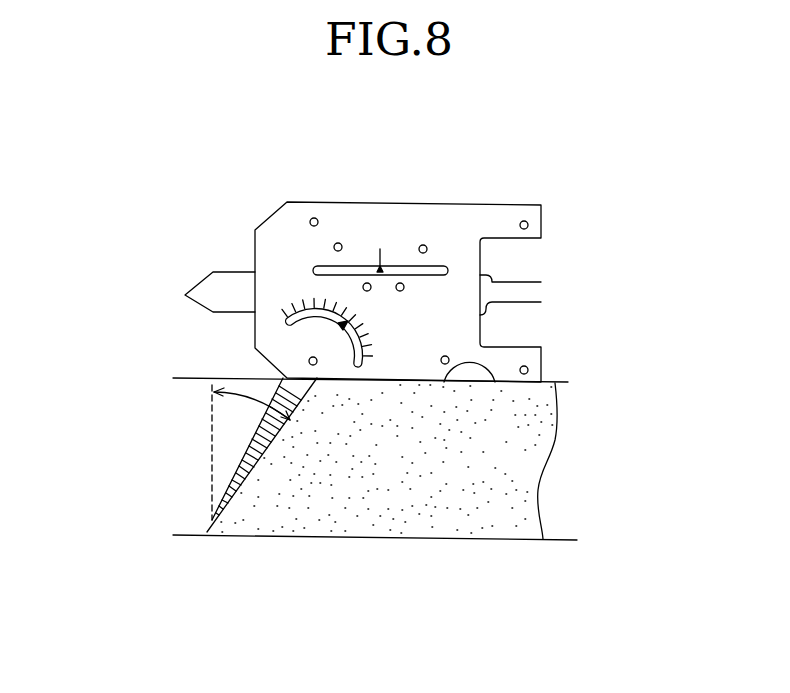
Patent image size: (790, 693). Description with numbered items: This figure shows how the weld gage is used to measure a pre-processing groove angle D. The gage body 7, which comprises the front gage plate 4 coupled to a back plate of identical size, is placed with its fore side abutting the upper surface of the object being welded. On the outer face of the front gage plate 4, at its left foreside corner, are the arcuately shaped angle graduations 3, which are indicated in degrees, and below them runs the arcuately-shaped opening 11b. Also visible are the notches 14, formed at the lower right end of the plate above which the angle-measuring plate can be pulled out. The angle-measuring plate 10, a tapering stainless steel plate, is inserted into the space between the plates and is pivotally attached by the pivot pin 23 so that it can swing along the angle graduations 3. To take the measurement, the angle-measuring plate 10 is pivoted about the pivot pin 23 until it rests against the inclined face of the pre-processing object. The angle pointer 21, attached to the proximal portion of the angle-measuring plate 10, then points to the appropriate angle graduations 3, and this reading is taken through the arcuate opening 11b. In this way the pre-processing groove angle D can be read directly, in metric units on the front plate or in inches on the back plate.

The angle graduations 3 is at (287, 300).
The gage body 7 is at (362, 203).
The front gage plate 4 is at (473, 217).
The arcuately-shaped opening 11b is at (313, 318).
The angle pointer 21 is at (341, 324).
The notches 14 is at (467, 364).
The pivot pin 23 is at (318, 366).
The angle-measuring plate 10 is at (238, 472).
The pre-processing groove angle D is at (248, 398).